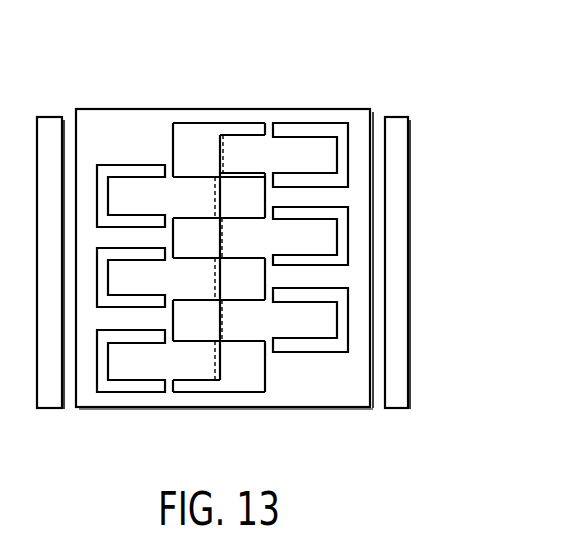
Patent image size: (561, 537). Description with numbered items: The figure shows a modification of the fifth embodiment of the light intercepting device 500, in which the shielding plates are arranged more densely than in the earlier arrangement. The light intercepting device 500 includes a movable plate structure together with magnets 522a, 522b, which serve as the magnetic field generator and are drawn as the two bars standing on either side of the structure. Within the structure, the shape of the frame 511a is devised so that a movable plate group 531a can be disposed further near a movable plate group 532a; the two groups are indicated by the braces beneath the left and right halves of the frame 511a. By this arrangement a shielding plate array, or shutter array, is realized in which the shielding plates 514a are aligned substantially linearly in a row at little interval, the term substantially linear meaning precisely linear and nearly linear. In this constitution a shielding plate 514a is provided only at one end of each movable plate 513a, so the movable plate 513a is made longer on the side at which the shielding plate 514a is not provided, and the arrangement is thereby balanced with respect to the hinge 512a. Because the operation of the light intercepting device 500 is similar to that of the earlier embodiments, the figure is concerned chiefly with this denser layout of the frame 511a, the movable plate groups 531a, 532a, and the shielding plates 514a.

The light intercepting device 500 is at (88, 108).
The frame 511a is at (156, 262).
The hinge 512a is at (268, 120).
The movable plate 513a is at (291, 255).
The shielding plate 514a is at (221, 155).
The magnet 522a is at (46, 117).
The magnet 522b is at (402, 117).
The movable plate group 531a is at (92, 410).
The movable plate group 532a is at (223, 411).